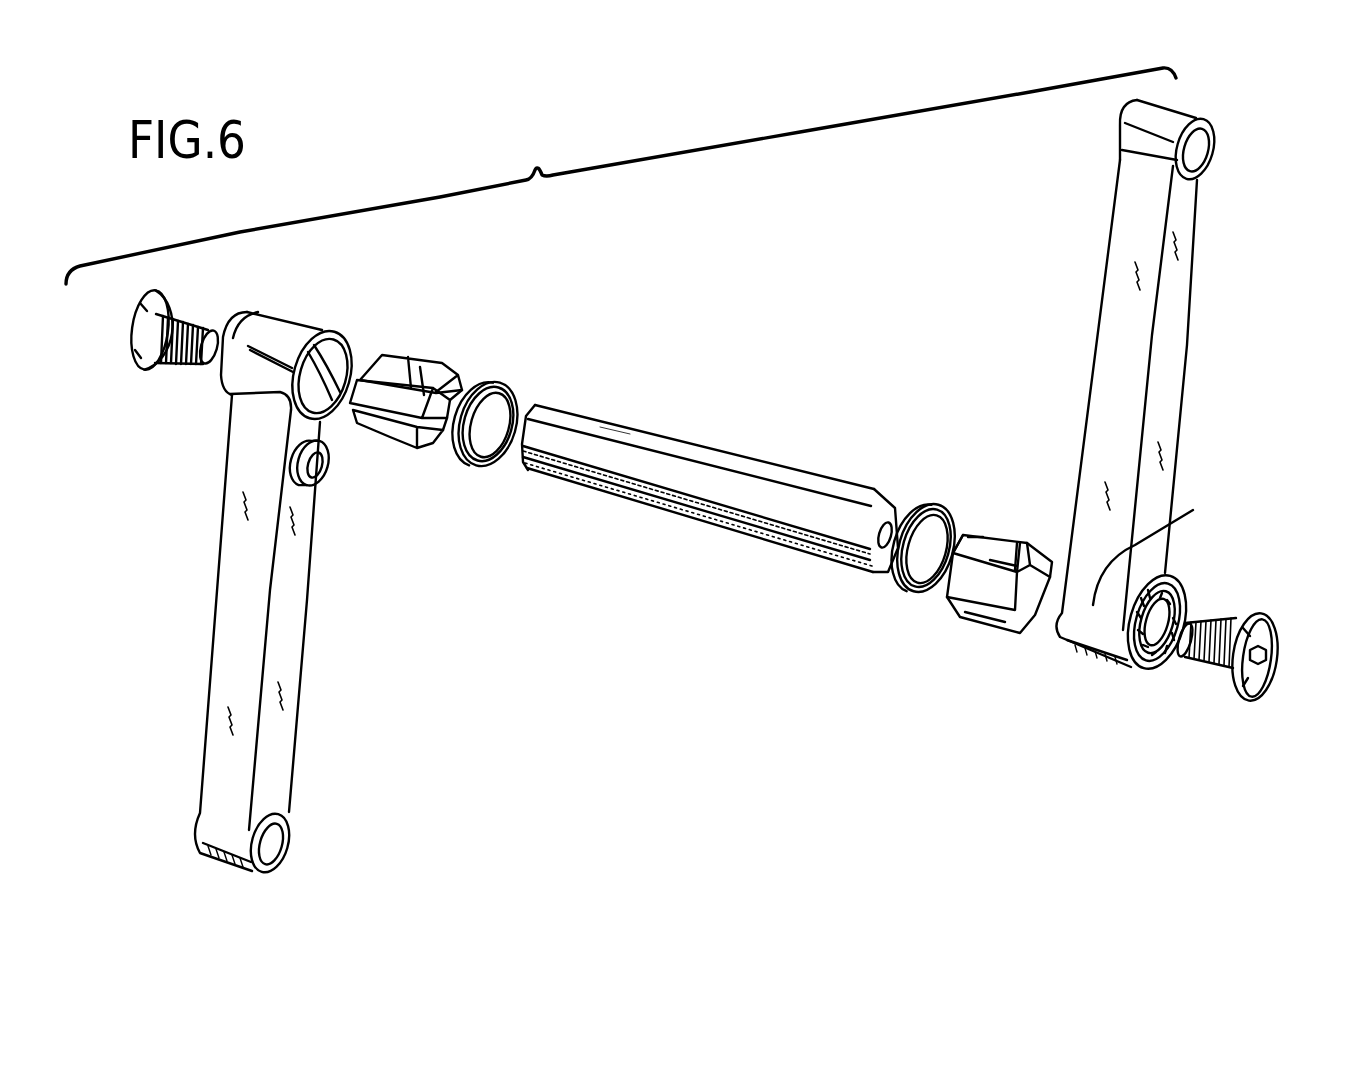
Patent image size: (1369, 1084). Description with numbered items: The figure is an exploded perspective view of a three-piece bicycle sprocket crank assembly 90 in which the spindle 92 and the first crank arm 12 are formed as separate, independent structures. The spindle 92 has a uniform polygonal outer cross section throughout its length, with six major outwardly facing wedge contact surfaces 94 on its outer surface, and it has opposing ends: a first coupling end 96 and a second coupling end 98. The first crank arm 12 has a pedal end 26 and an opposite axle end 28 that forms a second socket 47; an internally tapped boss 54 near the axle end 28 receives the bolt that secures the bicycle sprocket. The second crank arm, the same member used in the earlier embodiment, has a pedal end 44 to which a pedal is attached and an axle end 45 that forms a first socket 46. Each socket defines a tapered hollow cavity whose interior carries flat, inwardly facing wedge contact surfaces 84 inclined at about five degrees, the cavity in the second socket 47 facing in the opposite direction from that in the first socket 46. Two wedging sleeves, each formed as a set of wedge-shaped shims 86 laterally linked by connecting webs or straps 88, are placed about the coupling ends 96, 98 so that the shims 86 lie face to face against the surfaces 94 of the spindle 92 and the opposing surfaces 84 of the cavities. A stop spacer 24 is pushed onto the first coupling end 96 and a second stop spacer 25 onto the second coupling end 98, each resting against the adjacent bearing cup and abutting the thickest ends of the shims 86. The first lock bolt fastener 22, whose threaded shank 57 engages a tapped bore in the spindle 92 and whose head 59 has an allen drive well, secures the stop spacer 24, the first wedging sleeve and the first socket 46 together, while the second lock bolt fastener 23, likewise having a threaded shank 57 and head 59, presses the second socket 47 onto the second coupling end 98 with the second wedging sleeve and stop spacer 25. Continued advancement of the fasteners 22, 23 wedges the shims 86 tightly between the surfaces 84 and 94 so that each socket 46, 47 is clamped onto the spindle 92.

The first crank arm 12 is at (698, 566).
The first lock bolt fastener 22 is at (1296, 599).
The second lock bolt fastener 23 is at (725, 454).
The stop spacer 24 is at (928, 510).
The second stop spacer 25 is at (510, 387).
The pedal end 26 is at (263, 803).
The axle end 28 is at (250, 427).
The pedal end 44 is at (1138, 167).
The axle end 45 is at (1156, 544).
The first socket 46 is at (1090, 640).
The second socket 47 is at (725, 489).
The internally tapped boss 54 is at (327, 483).
The threaded shank 57 is at (196, 318).
The bolt head 59 is at (162, 305).
The wedge contact surfaces 84 is at (337, 343).
The wedge-shaped shims 86 is at (390, 358).
The connecting webs 88 is at (420, 367).
The bicycle sprocket crank assembly 90 is at (533, 167).
The spindle 92 is at (713, 452).
The wedge contact surfaces 94 is at (595, 420).
The first coupling end 96 is at (870, 508).
The second coupling end 98 is at (543, 410).